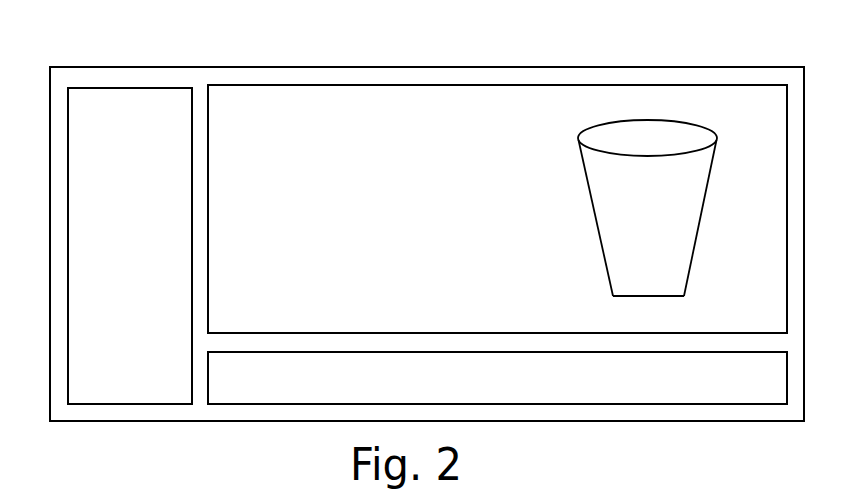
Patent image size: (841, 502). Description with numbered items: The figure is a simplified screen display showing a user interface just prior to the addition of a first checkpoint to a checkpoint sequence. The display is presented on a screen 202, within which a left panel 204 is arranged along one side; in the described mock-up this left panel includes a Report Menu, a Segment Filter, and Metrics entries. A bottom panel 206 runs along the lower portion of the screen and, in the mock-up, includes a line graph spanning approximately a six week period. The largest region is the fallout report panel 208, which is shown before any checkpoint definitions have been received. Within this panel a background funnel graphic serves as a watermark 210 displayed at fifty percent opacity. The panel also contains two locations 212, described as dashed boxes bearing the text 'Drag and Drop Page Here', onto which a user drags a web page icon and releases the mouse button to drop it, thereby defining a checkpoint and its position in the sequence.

The screen 202 is at (427, 226).
The left panel 204 is at (144, 159).
The bottom panel 206 is at (462, 386).
The interface panel 208 is at (758, 317).
The funnel watermark 210 is at (660, 159).
The drag and drop page location 212 is at (393, 167).